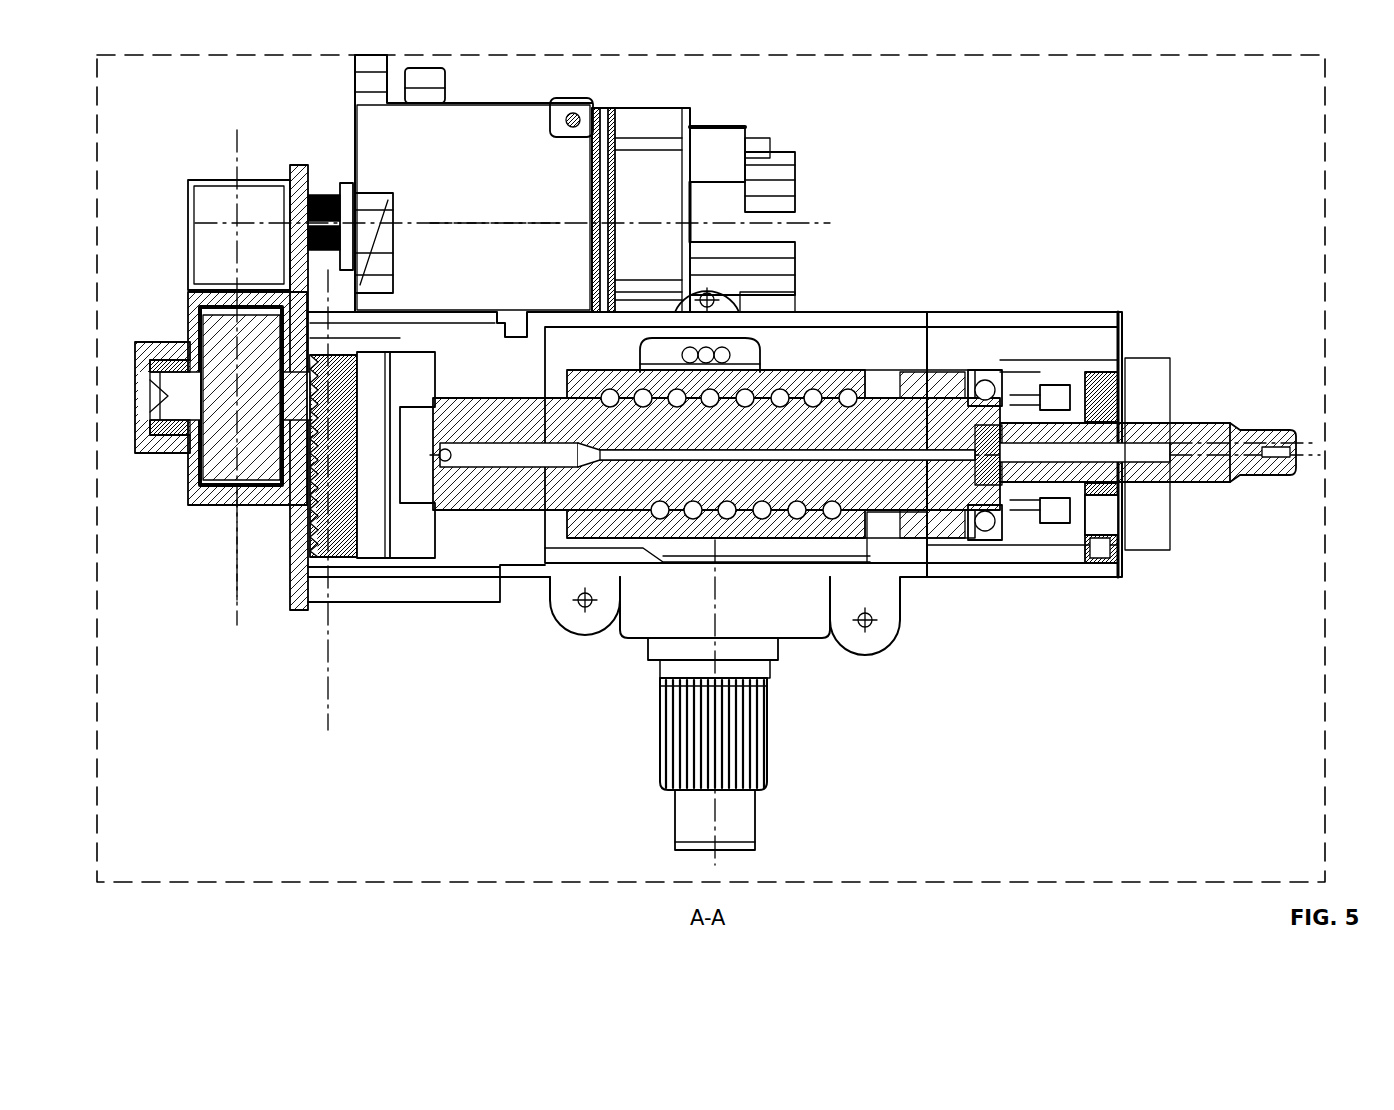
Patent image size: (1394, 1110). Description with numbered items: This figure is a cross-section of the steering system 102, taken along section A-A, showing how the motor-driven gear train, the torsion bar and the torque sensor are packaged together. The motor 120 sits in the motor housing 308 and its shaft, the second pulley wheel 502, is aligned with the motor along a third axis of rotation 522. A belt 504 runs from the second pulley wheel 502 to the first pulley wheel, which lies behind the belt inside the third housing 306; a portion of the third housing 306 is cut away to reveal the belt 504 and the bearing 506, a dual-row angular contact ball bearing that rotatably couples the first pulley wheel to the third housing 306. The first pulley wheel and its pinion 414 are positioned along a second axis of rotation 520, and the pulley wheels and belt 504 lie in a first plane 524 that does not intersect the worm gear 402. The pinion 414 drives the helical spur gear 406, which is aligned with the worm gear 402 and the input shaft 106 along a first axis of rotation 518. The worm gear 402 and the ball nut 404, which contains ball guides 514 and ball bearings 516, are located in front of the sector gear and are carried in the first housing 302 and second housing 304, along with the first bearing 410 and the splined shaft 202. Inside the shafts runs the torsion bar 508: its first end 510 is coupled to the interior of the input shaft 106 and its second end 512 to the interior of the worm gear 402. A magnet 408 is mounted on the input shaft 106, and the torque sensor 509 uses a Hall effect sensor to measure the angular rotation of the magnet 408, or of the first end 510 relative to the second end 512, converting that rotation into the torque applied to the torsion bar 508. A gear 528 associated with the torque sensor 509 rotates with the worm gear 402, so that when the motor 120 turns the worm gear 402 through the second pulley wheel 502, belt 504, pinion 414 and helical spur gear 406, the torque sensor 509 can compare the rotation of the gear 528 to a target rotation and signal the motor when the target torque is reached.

The steering system 102 is at (1150, 34).
The input shaft 106 is at (1242, 430).
The motor 120 is at (475, 182).
The splined shaft 202 is at (768, 740).
The first housing 302 is at (975, 312).
The second housing 304 is at (815, 312).
The third housing 306 is at (188, 252).
The motor housing 308 is at (500, 100).
The worm gear 402 is at (905, 397).
The ball nut 404 is at (882, 397).
The helical spur gear 406 is at (323, 570).
The magnet 408 is at (1085, 540).
The first bearing 410 is at (987, 372).
The pinion 414 is at (388, 340).
The second pulley wheel 502 is at (343, 190).
The belt 504 is at (217, 503).
The bearing of the first pulley wheel 506 is at (156, 458).
The torsion bar 508 is at (908, 458).
The torque sensor 509 is at (1108, 380).
The first end 510 is at (1170, 425).
The second end 512 is at (520, 467).
The ball guides 514 is at (772, 362).
The ball bearings 516 is at (766, 570).
The first axis of rotation 518 is at (628, 460).
The second axis of rotation 520 is at (145, 385).
The third axis of rotation 522 is at (490, 228).
The first plane 524 is at (237, 597).
The gear associated with the torque sensor 528 is at (1045, 387).